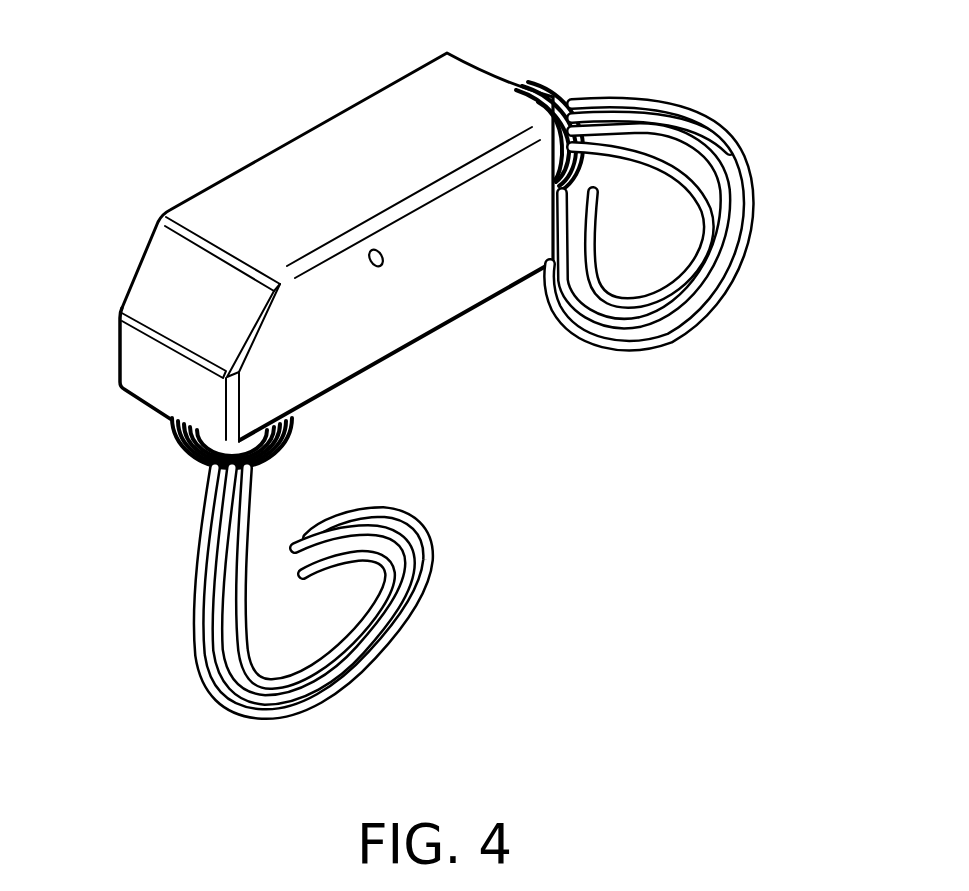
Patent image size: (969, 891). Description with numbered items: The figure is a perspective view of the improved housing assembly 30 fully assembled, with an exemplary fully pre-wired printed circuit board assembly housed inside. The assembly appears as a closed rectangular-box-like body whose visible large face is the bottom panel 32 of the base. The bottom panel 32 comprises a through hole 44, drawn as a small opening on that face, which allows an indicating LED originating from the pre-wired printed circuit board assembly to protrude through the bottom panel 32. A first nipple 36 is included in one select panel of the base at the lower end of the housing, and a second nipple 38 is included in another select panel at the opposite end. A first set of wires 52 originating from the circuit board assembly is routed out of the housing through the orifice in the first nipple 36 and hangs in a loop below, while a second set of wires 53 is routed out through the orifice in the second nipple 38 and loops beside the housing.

The improved housing assembly 30 is at (198, 136).
The bottom panel 32 is at (320, 320).
The first nipple 36 is at (197, 455).
The second nipple 38 is at (560, 97).
The through hole 44 is at (383, 263).
The first set of wires 52 is at (445, 610).
The second set of wires 53 is at (728, 314).